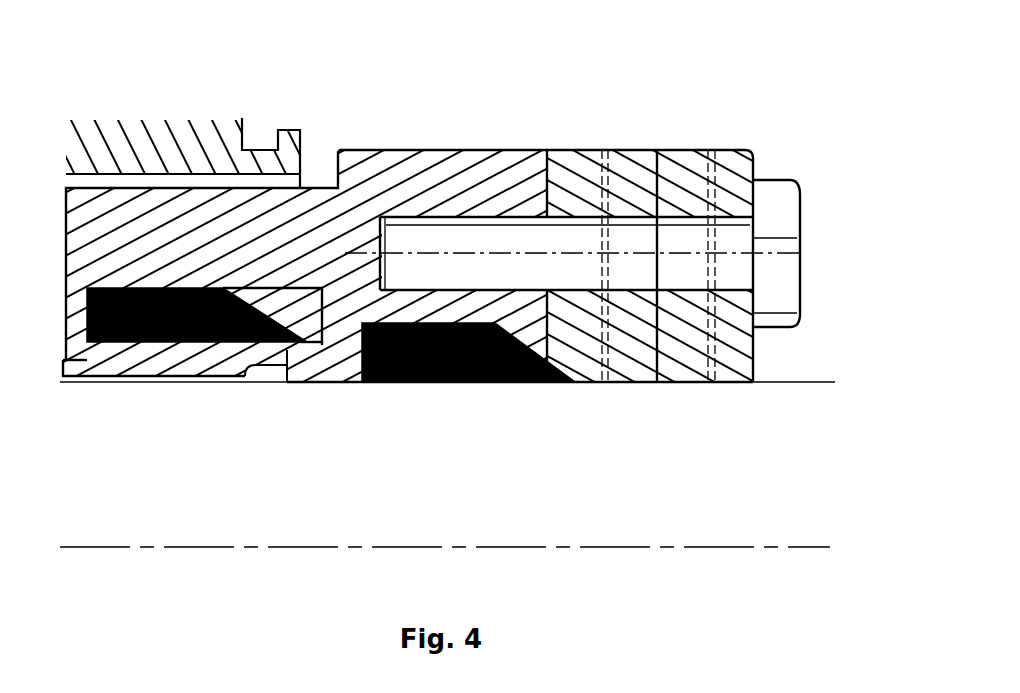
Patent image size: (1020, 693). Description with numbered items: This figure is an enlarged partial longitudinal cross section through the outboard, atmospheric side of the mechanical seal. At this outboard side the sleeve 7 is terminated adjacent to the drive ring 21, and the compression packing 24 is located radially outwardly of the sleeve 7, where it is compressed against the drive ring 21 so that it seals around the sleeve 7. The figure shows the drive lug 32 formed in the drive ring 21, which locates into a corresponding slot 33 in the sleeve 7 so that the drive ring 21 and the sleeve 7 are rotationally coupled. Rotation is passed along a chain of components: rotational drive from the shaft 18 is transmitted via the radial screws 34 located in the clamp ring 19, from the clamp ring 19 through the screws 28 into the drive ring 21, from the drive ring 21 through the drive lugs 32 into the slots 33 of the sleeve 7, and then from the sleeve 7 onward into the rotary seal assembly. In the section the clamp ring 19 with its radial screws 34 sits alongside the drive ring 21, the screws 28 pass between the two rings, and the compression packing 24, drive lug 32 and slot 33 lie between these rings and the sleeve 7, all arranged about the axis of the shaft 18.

The sleeve 7 is at (213, 363).
The shaft 18 is at (228, 448).
The clamp ring 19 is at (582, 178).
The drive ring 21 is at (462, 180).
The compression packing 24 is at (218, 290).
The screws 28 is at (767, 210).
The drive lug 32 is at (318, 352).
The slots 33 is at (287, 352).
The radial screws 34 is at (683, 384).